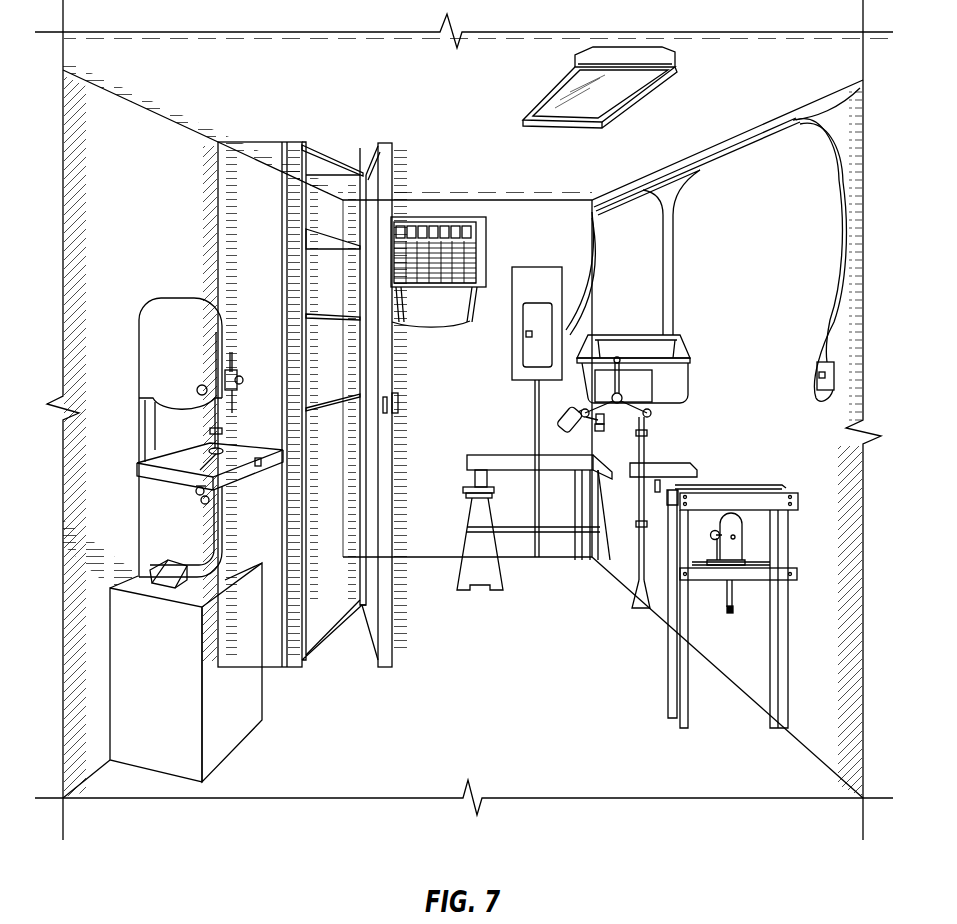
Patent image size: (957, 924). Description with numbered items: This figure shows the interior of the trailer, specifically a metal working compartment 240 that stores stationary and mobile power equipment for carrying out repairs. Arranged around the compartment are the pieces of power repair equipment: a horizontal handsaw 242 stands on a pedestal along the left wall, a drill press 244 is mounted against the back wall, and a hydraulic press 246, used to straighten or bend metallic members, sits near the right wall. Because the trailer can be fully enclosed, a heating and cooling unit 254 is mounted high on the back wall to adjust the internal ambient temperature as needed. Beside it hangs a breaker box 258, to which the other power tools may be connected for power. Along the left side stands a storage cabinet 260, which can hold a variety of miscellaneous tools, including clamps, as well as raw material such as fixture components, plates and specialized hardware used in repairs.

The metal working compartment 240 is at (533, 699).
The horizontal handsaw 242 is at (173, 310).
The drill press 244 is at (622, 334).
The hydraulic press 246 is at (730, 488).
The heating and cooling unit 254 is at (456, 220).
The breaker box 258 is at (530, 288).
The storage cabinet 260 is at (268, 142).